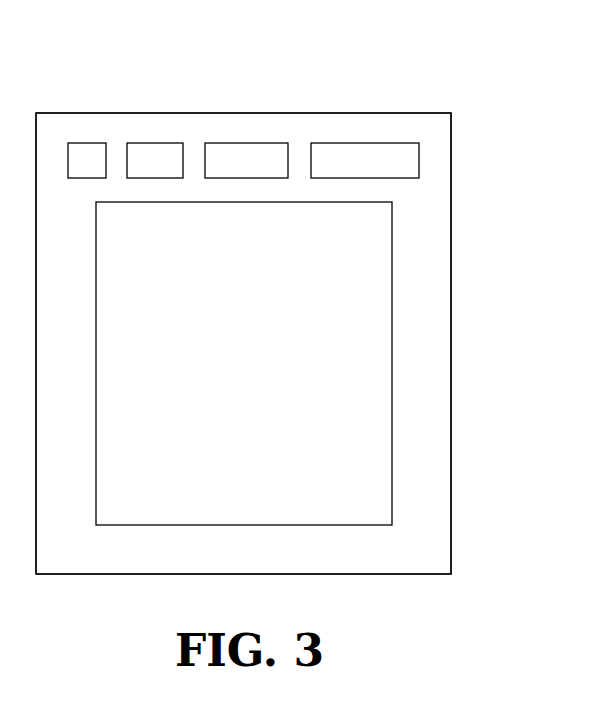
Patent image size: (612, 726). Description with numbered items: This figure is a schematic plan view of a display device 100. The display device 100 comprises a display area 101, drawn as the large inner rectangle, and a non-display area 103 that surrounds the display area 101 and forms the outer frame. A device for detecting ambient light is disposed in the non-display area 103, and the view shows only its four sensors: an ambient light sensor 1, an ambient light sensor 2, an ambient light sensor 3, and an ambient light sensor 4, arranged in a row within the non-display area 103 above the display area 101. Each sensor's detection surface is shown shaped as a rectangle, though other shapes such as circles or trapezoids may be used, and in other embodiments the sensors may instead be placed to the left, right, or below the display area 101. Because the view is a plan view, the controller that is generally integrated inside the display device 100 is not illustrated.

The display device 100 is at (82, 65).
The display area 101 is at (337, 344).
The non-display area 103 is at (425, 239).
The ambient light sensor 1 is at (365, 160).
The ambient light sensor 2 is at (246, 160).
The ambient light sensor 3 is at (155, 160).
The ambient light sensor 4 is at (87, 160).